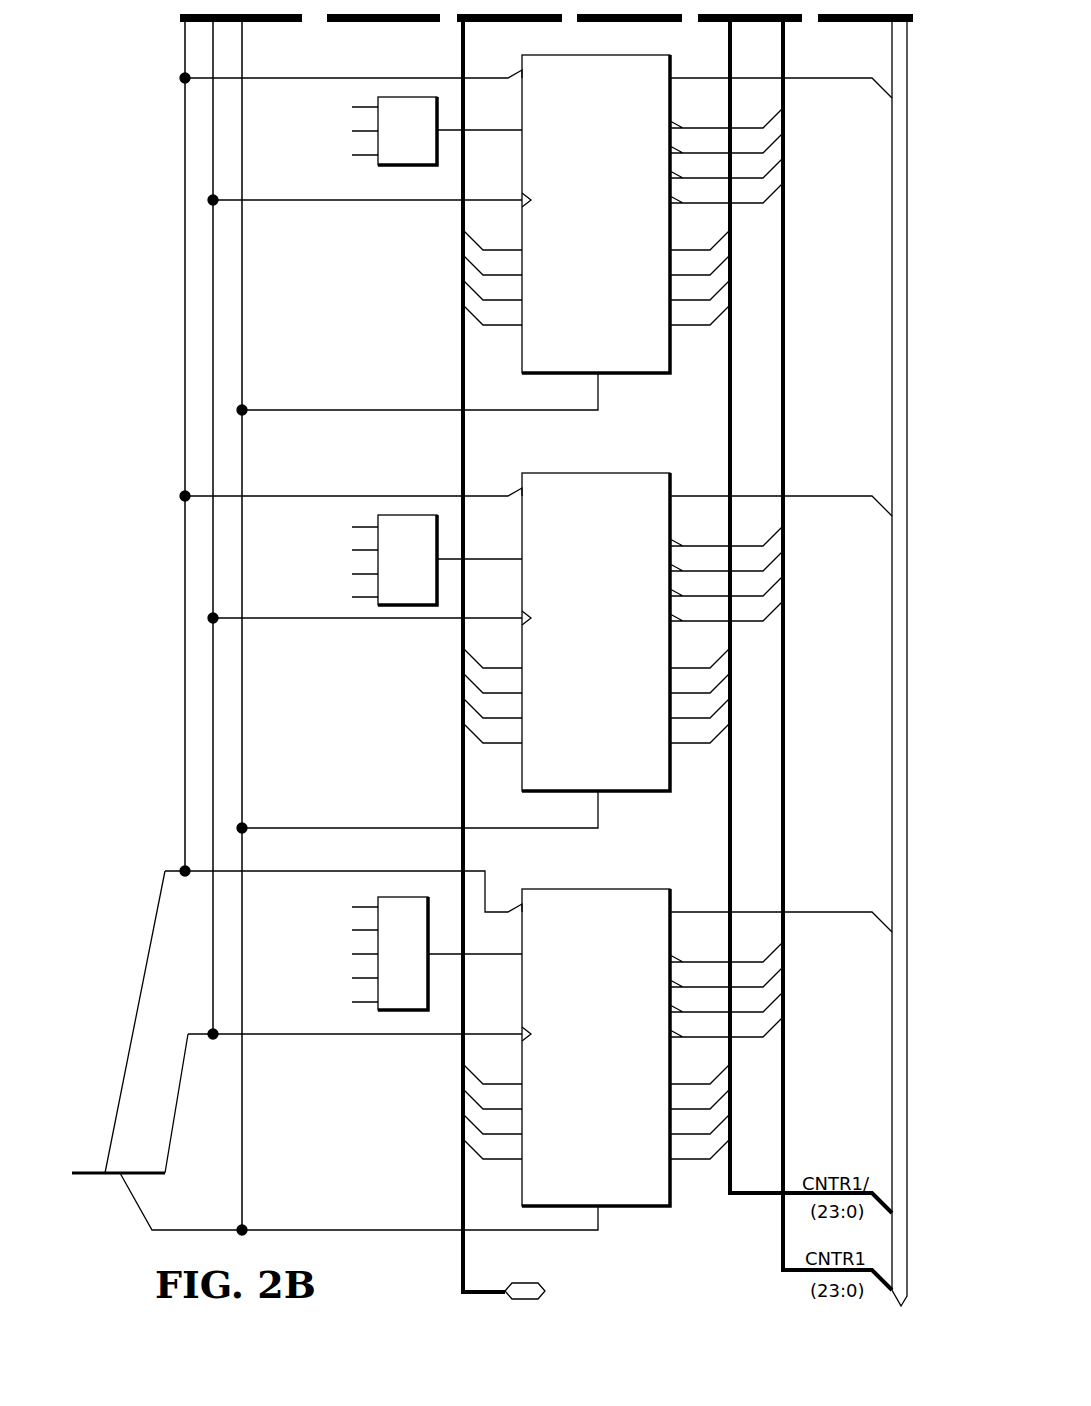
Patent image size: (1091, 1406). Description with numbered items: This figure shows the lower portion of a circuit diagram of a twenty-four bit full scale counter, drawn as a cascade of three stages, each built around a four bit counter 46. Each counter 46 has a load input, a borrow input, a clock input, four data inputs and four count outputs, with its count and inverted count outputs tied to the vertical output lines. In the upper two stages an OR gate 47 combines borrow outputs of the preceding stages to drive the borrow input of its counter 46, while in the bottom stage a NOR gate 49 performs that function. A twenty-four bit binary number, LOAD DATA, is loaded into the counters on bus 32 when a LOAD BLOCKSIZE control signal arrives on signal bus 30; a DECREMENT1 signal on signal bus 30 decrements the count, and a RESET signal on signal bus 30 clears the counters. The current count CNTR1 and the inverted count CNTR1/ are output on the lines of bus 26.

The 4 bit counter 46 is at (650, 55).
The OR gate 47 is at (397, 165).
The NOR gate 49 is at (397, 1010).
The signal bus 30 is at (88, 1173).
The bus 32 is at (463, 1278).
The bus 26 is at (892, 1088).